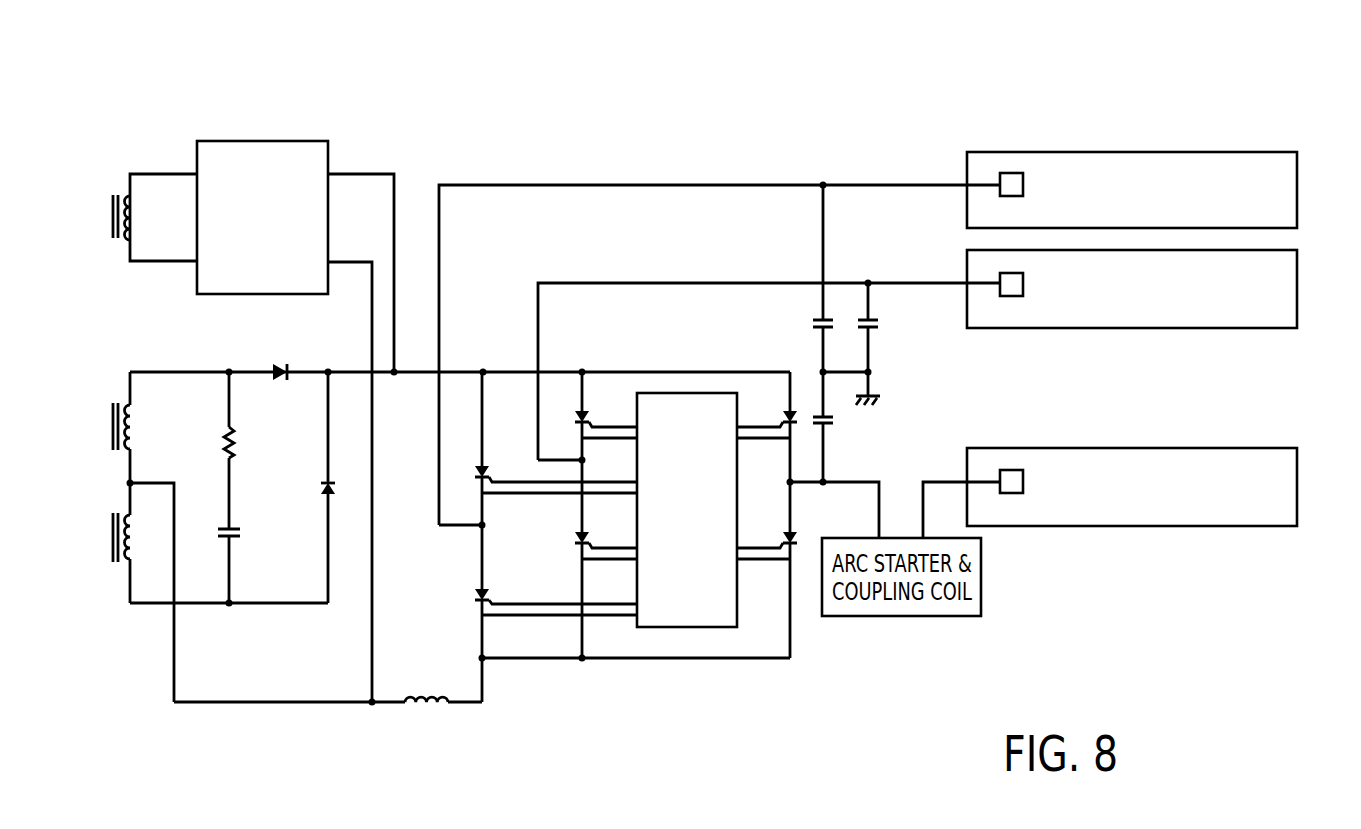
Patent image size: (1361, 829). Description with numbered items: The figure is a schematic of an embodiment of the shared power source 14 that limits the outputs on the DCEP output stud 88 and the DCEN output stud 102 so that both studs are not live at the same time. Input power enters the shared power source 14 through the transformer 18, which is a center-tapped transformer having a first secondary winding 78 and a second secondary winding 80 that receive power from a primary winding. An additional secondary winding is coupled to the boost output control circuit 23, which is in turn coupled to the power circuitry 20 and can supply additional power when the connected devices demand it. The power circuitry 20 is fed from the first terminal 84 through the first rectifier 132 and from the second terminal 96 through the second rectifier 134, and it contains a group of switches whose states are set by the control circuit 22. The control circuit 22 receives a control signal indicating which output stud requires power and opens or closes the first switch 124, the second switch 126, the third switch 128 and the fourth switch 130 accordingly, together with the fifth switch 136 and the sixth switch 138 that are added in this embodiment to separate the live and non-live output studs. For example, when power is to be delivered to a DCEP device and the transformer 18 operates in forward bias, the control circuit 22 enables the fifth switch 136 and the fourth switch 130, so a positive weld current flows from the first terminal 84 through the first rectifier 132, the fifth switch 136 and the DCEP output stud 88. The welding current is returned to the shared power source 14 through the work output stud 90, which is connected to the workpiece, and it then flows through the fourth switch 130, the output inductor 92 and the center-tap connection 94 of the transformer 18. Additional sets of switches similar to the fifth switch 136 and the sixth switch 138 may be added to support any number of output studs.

The shared power source 14 is at (522, 121).
The transformer 18 is at (126, 513).
The power circuitry 20 is at (274, 731).
The control circuit 22 is at (687, 392).
The boost output control circuit 23 is at (263, 139).
The first secondary winding 78 is at (112, 415).
The second secondary winding 80 is at (112, 537).
The first terminal 84 is at (131, 410).
The DCEP output stud 88 is at (1298, 190).
The work output stud 90 is at (1132, 447).
The output inductor 92 is at (427, 705).
The center-tap connection 94 is at (131, 483).
The second terminal 96 is at (131, 568).
The DCEN output stud 102 is at (1298, 290).
The first switch 124 is at (583, 413).
The second switch 126 is at (578, 536).
The third switch 128 is at (789, 412).
The fourth switch 130 is at (792, 532).
The first rectifier 132 is at (273, 362).
The second rectifier 134 is at (322, 488).
The fifth switch 136 is at (480, 468).
The sixth switch 138 is at (480, 591).